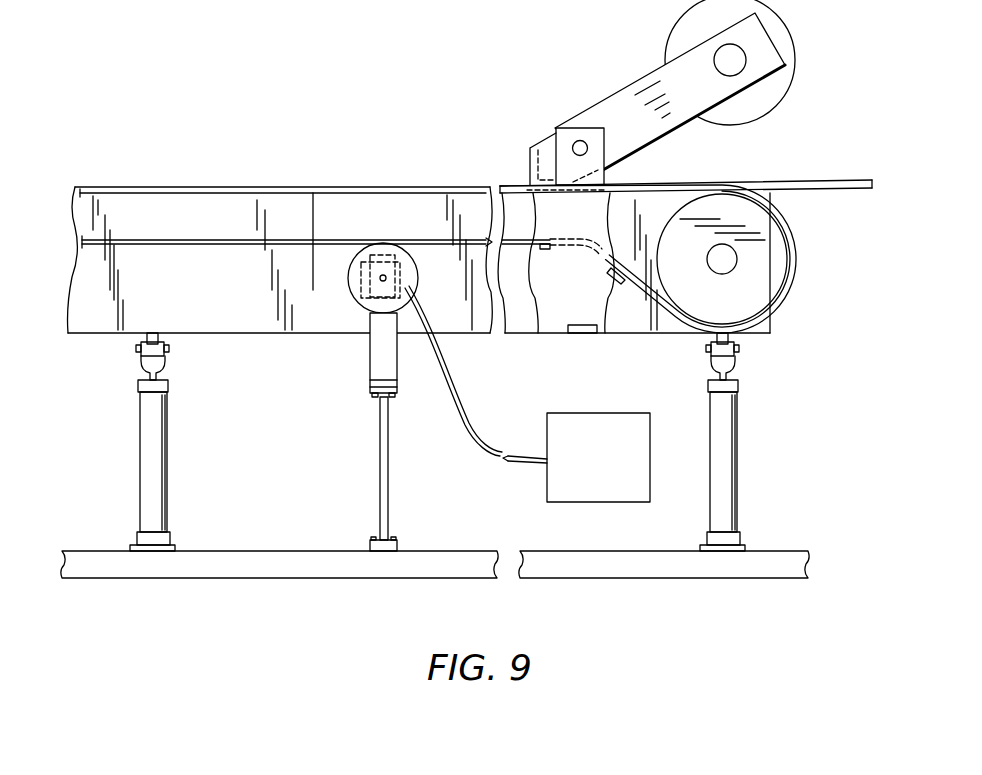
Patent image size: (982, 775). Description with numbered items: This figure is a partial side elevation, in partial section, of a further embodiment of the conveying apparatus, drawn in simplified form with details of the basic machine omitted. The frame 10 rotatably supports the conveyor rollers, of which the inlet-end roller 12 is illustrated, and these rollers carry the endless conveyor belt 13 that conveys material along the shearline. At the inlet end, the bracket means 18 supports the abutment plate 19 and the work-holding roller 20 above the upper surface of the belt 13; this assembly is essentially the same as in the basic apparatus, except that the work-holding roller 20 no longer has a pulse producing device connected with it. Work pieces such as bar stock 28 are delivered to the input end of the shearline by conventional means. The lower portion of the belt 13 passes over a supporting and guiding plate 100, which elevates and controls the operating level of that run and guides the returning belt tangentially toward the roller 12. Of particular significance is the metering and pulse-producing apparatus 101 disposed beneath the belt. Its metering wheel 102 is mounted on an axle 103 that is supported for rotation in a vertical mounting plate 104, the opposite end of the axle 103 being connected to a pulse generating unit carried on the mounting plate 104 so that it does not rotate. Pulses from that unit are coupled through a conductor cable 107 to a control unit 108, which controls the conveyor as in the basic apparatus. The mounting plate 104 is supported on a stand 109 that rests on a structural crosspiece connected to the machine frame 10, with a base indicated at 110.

The frame 10 is at (348, 203).
The roller 12 is at (788, 234).
The conveyor belt 13 is at (185, 186).
The bracket means 18 is at (598, 94).
The abutment plate 19 is at (524, 172).
The work-holding roller 20 is at (778, 3).
The bar stock 28 is at (741, 181).
The supporting and guiding plate 100 is at (648, 259).
The metering and pulse-producing apparatus 101 is at (354, 397).
The metering wheel 102 is at (352, 292).
The axle 103 is at (389, 275).
The mounting plate 104 is at (370, 355).
The conductor cable 107 is at (480, 380).
The control unit 108 is at (571, 413).
The stand 109 is at (380, 448).
The foot plate 110 is at (403, 520).